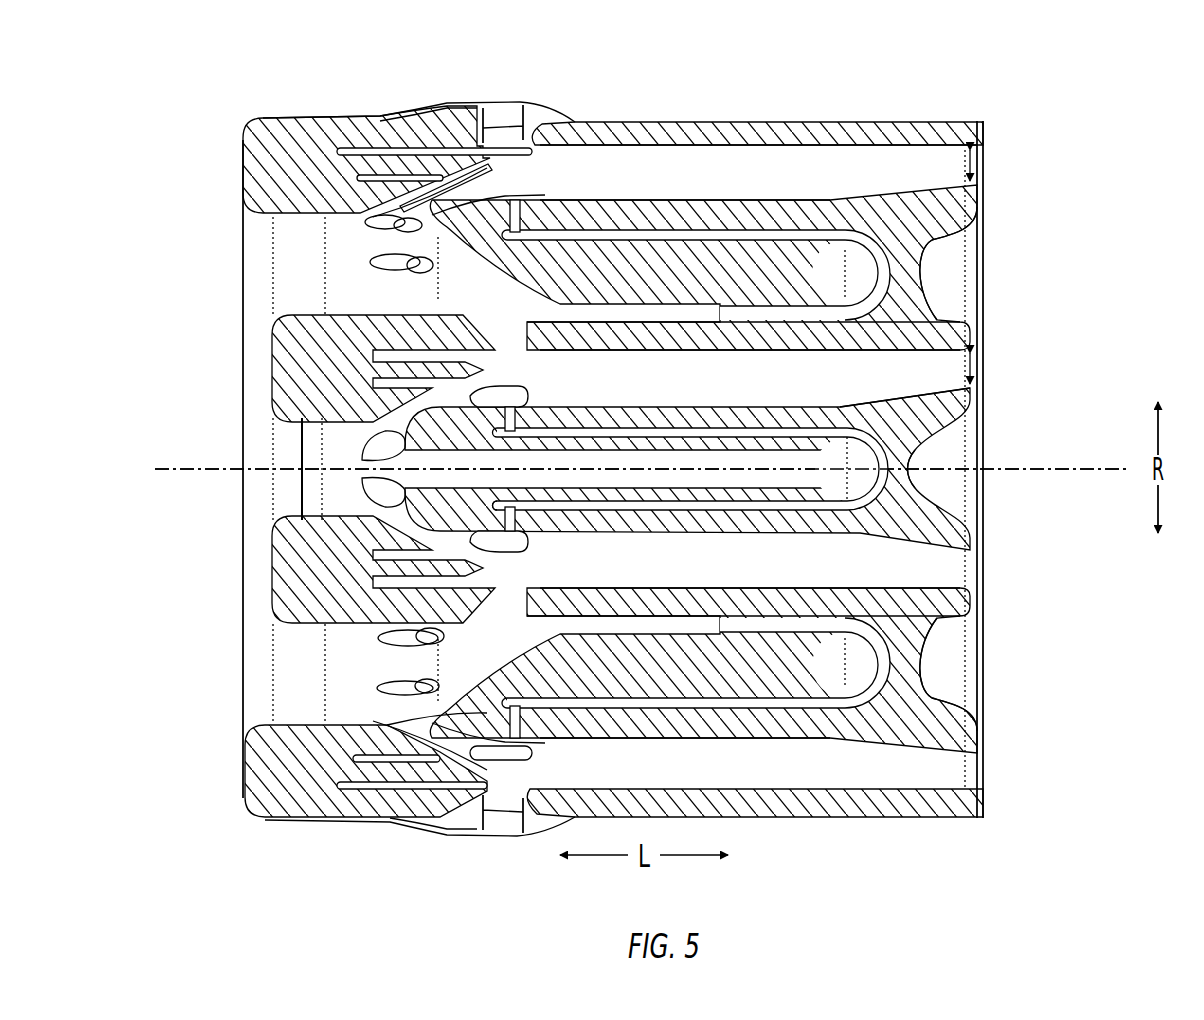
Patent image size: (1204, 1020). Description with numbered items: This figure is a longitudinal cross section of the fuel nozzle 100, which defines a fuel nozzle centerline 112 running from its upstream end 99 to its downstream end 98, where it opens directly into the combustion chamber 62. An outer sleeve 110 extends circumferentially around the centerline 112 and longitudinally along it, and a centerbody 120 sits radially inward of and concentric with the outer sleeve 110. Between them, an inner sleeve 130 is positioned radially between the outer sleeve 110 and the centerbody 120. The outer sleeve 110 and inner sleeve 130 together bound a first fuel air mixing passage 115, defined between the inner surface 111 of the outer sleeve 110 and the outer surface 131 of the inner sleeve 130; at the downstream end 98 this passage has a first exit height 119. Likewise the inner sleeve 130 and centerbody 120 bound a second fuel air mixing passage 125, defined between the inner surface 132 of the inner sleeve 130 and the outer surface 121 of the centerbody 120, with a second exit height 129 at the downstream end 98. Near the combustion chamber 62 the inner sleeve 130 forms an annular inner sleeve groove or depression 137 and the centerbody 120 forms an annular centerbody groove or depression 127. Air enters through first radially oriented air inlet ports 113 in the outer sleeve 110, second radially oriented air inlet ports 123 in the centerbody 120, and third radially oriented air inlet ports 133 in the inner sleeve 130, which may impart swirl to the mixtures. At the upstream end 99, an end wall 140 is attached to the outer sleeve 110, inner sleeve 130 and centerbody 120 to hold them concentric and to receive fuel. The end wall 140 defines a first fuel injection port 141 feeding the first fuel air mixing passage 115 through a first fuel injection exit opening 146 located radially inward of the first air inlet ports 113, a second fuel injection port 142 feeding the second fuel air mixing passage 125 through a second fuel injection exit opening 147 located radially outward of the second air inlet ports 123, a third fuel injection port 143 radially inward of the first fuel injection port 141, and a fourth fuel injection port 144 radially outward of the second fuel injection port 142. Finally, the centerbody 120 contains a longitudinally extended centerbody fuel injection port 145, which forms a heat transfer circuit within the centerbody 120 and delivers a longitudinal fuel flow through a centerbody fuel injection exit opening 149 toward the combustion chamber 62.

The fuel nozzle 100 is at (1146, 108).
The outer sleeve 110 is at (805, 124).
The inner surface of the outer sleeve 111 is at (886, 150).
The fuel nozzle centerline 112 is at (1080, 470).
The first radially oriented air inlet ports 113 is at (524, 102).
The first fuel air mixing passage 115 is at (683, 192).
The first exit height 119 is at (980, 165).
The centerbody 120 is at (976, 402).
The outer surface of the centerbody 121 is at (838, 400).
The second radially oriented air inlet ports 123 is at (356, 438).
The second fuel air mixing passage 125 is at (671, 400).
The annular centerbody groove or depression 127 is at (922, 452).
The second exit height 129 is at (980, 365).
The inner sleeve 130 is at (914, 236).
The outer surface of the inner sleeve 131 is at (832, 194).
The inner surface of the inner sleeve 132 is at (846, 354).
The third radially oriented air inlet ports 133 is at (411, 704).
The annular inner sleeve groove or depression 137 is at (940, 291).
The end wall 140 is at (285, 137).
The first fuel injection port 141 is at (404, 148).
The second fuel injection port 142 is at (352, 322).
The third fuel injection port 143 is at (384, 181).
The fourth fuel injection port 144 is at (389, 346).
The centerbody fuel injection port 145 is at (772, 506).
The first fuel injection exit opening 146 is at (485, 140).
The second fuel injection exit opening 147 is at (431, 359).
The centerbody fuel injection exit opening 149 is at (511, 538).
The combustion chamber 62 is at (1164, 577).
The downstream end 98 is at (1027, 525).
The upstream end 99 is at (199, 517).